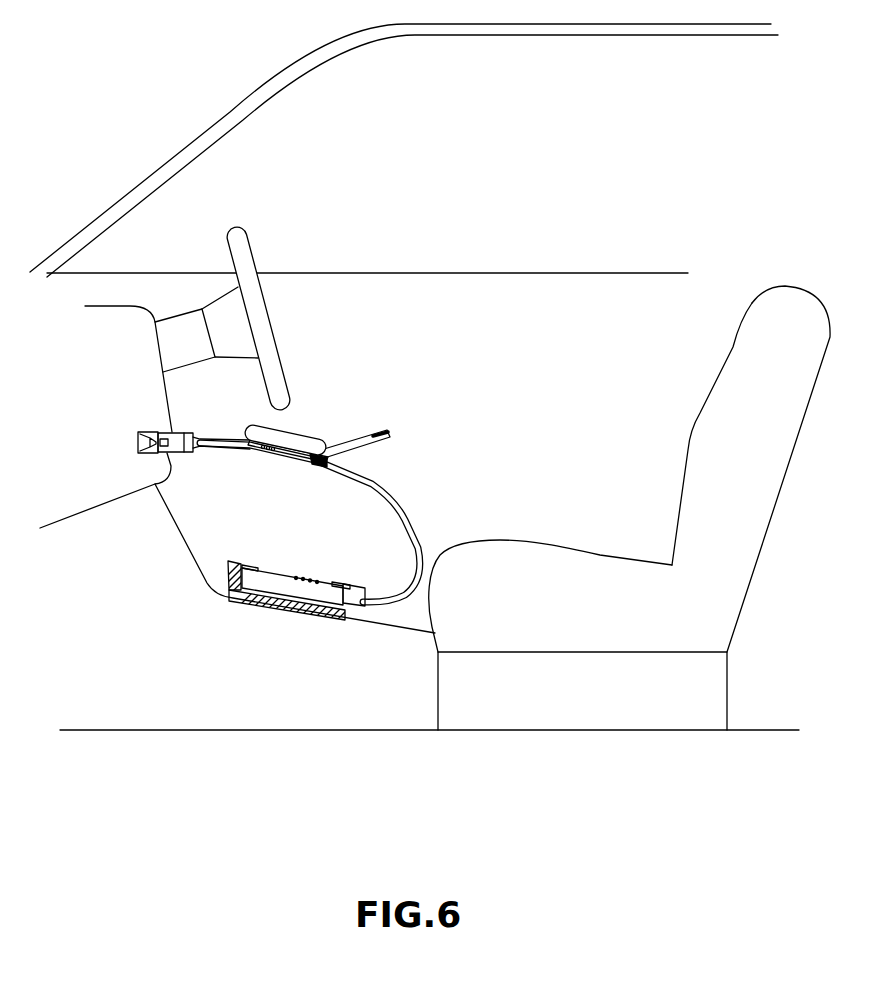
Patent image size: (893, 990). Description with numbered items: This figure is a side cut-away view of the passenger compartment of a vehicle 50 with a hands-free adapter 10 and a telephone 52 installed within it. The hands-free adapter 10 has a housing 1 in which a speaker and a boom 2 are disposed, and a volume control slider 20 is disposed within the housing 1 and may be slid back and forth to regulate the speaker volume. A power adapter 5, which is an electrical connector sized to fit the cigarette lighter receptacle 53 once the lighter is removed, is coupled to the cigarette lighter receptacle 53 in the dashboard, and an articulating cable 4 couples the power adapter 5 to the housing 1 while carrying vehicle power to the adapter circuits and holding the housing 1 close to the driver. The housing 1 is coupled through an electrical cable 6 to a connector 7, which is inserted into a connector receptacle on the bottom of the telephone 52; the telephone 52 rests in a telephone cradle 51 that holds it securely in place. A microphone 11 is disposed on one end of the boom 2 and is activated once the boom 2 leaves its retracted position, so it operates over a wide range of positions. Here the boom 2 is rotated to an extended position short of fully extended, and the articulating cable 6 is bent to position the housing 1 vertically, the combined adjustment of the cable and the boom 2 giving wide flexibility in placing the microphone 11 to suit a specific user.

The housing 1 is at (253, 426).
The boom 2 is at (372, 447).
The articulating cable 4 is at (218, 444).
The power adapter 5 is at (175, 433).
The electrical cable 6 is at (420, 533).
The connector 7 is at (362, 592).
The hands-free adapter 10 is at (277, 490).
The microphone 11 is at (373, 432).
The volume control slider 20 is at (265, 450).
The vehicle 50 is at (680, 105).
The telephone cradle 51 is at (233, 560).
The telephone 52 is at (282, 569).
The cigarette lighter receptacle 53 is at (138, 442).